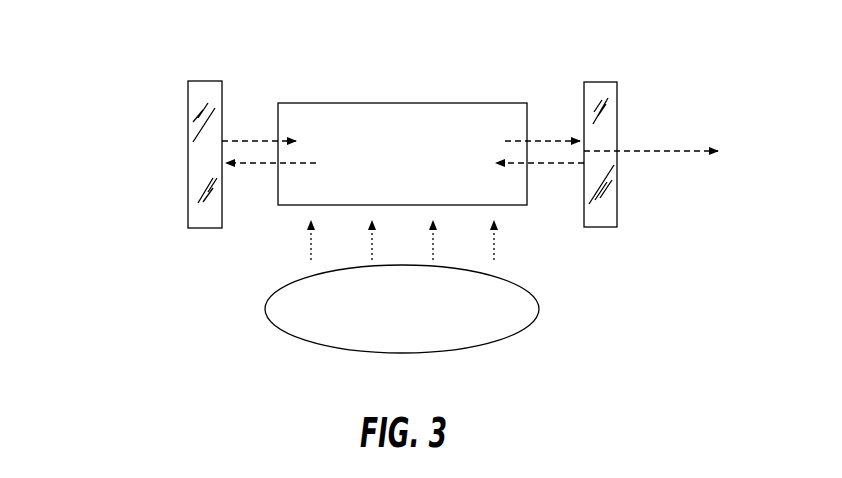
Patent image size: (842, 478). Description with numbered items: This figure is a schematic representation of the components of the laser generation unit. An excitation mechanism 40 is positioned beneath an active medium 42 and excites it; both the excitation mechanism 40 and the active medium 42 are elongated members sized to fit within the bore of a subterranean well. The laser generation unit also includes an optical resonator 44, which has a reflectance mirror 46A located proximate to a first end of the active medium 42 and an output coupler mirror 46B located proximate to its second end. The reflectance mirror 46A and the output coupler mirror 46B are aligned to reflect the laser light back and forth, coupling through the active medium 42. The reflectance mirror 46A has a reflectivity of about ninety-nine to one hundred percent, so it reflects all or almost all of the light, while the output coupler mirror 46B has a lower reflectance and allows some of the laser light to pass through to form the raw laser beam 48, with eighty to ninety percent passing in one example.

The excitation mechanism 40 is at (284, 333).
The active medium 42 is at (402, 103).
The optical resonator 44 is at (176, 55).
The reflectance mirror 46A is at (196, 183).
The output coupler mirror 46B is at (608, 193).
The raw laser beam 48 is at (652, 151).